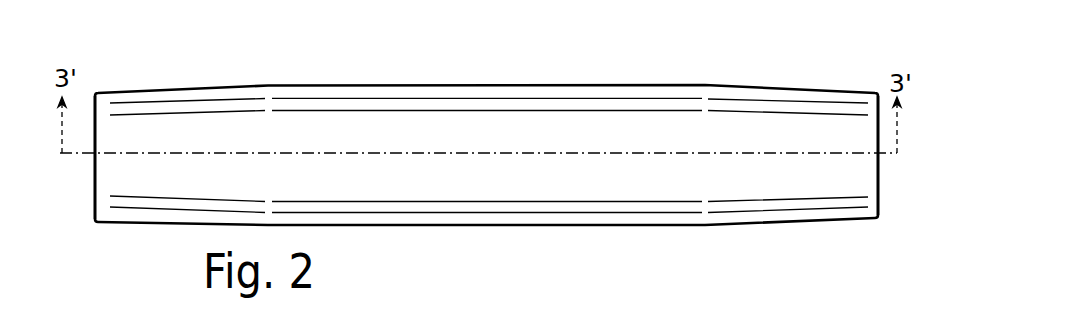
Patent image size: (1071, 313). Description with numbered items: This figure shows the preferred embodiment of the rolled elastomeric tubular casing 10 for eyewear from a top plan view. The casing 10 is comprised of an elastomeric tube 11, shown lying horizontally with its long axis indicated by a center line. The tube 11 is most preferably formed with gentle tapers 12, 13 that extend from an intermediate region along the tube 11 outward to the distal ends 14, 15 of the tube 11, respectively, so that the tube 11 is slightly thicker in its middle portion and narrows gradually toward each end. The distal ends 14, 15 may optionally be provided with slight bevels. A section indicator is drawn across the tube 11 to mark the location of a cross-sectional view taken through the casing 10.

The elastomeric tubular casing 10 is at (803, 47).
The elastomeric tube 11 is at (465, 192).
The gentle taper 12 is at (818, 222).
The gentle taper 13 is at (155, 92).
The distal end 14 is at (880, 208).
The distal end 15 is at (93, 210).